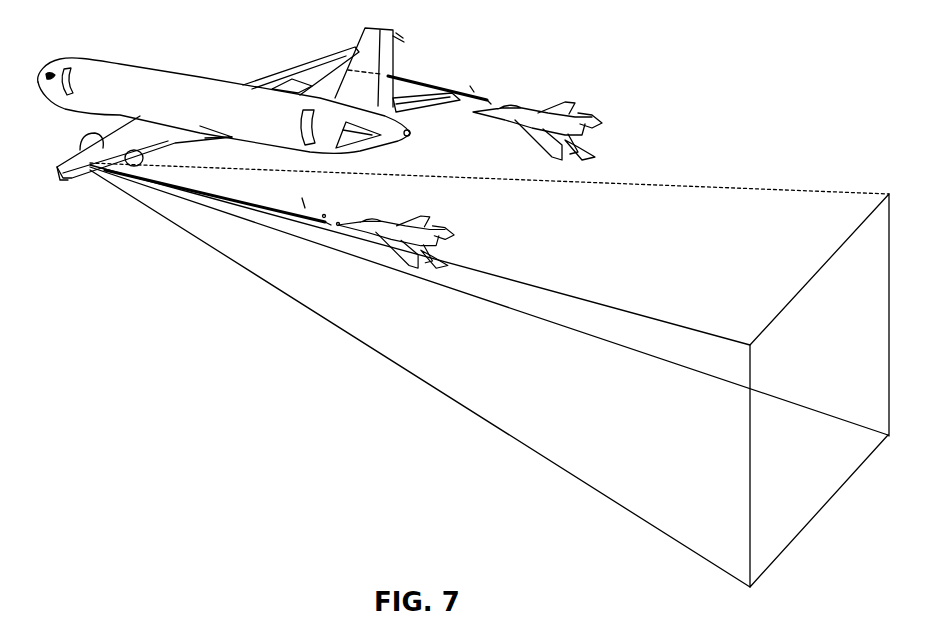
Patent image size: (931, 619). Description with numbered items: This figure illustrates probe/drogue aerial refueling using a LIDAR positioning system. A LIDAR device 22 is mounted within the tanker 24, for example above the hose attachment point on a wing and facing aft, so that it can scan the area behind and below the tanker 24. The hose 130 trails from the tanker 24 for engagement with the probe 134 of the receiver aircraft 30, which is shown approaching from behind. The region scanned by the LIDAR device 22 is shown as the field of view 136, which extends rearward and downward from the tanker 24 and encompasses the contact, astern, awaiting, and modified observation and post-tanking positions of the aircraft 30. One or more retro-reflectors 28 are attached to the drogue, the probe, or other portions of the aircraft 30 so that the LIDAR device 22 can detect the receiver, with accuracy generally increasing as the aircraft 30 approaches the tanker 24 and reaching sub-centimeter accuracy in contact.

The LIDAR device 22 is at (83, 168).
The tanker 24 is at (158, 68).
The reflectors 28 is at (324, 214).
The aircraft 30 is at (600, 123).
The hose 130 is at (443, 88).
The probe 134 is at (493, 110).
The field of view 136 is at (656, 455).